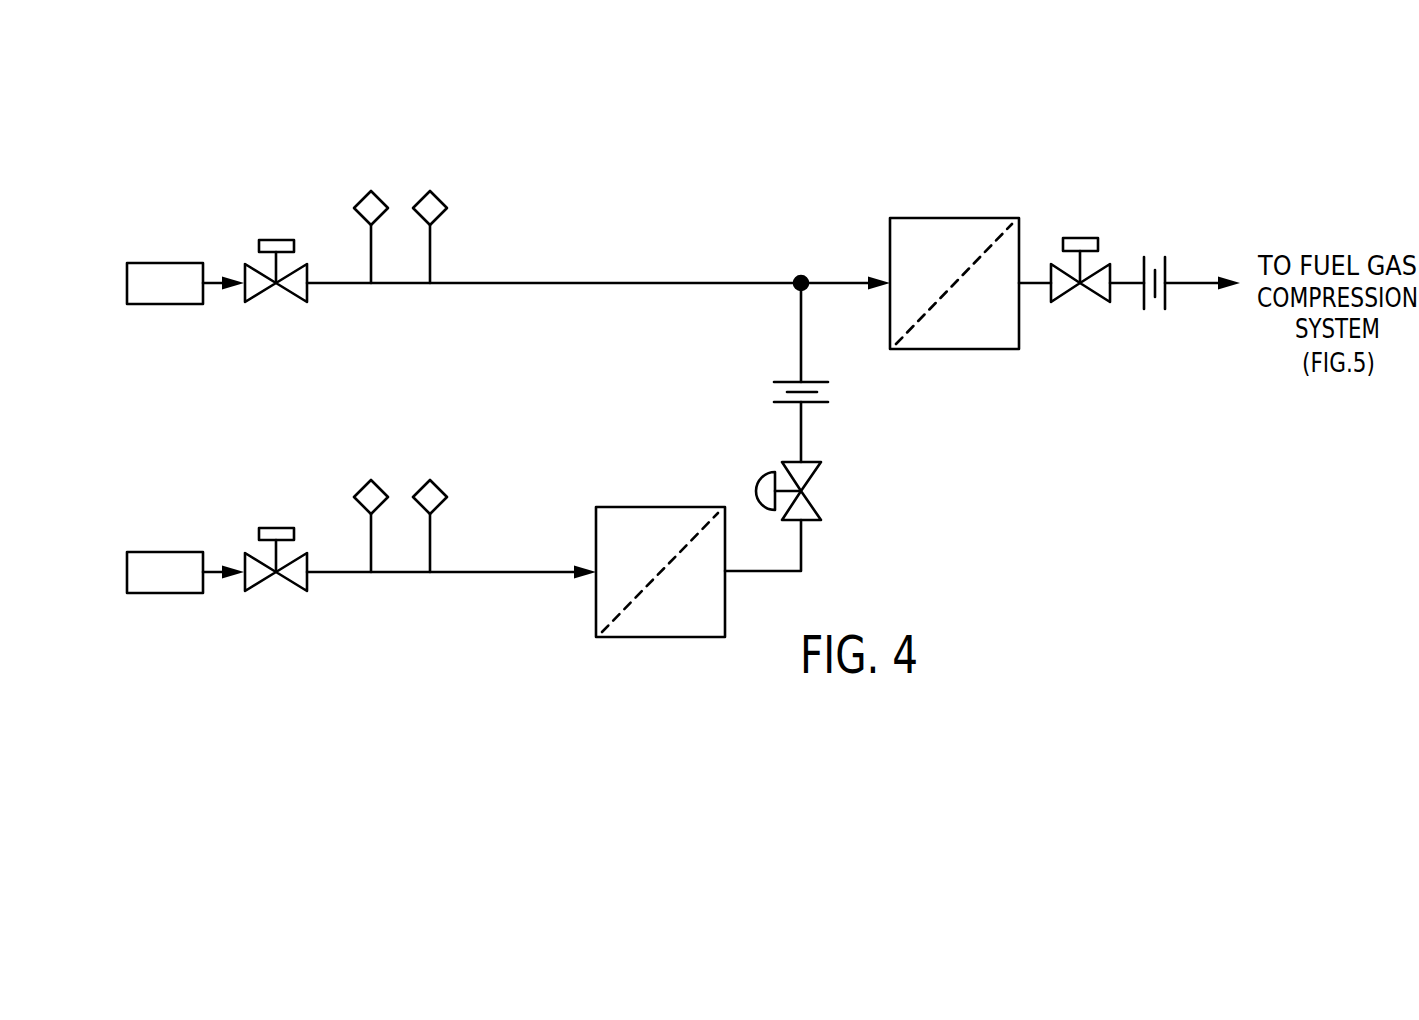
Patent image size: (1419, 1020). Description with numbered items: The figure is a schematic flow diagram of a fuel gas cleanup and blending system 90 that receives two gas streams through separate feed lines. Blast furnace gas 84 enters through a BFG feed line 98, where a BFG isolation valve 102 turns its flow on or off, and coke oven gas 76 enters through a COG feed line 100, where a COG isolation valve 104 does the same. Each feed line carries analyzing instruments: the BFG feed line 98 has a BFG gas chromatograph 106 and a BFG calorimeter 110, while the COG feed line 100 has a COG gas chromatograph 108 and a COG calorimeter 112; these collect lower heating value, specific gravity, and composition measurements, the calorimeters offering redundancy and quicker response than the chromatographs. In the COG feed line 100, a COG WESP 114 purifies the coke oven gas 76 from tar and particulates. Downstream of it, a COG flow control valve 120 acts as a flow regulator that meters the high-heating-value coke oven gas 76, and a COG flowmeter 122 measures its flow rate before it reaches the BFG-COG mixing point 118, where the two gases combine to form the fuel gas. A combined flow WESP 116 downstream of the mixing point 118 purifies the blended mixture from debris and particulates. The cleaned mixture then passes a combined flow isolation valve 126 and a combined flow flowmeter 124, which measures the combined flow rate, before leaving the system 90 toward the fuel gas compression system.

The fuel gas cleanup and blending system 90 is at (233, 117).
The blast furnace gas (BFG) 84 is at (163, 262).
The coke oven gas (COG) 76 is at (163, 551).
The BFG isolation valve 102 is at (276, 240).
The COG isolation valve 104 is at (276, 528).
The BFG gas chromatograph 106 is at (362, 196).
The BFG calorimeter 110 is at (439, 196).
The COG gas chromatograph 108 is at (362, 485).
The COG calorimeter 112 is at (439, 485).
The BFG feed line 98 is at (583, 285).
The COG feed line 100 is at (488, 573).
The COG WESP 114 is at (660, 506).
The combined flow WESP 116 is at (952, 218).
The BFG-COG mixing point 118 is at (798, 277).
The COG flow control valve 120 is at (811, 478).
The COG flowmeter 122 is at (783, 382).
The combined flow flowmeter 124 is at (1147, 262).
The combined flow isolation valve 126 is at (1079, 238).